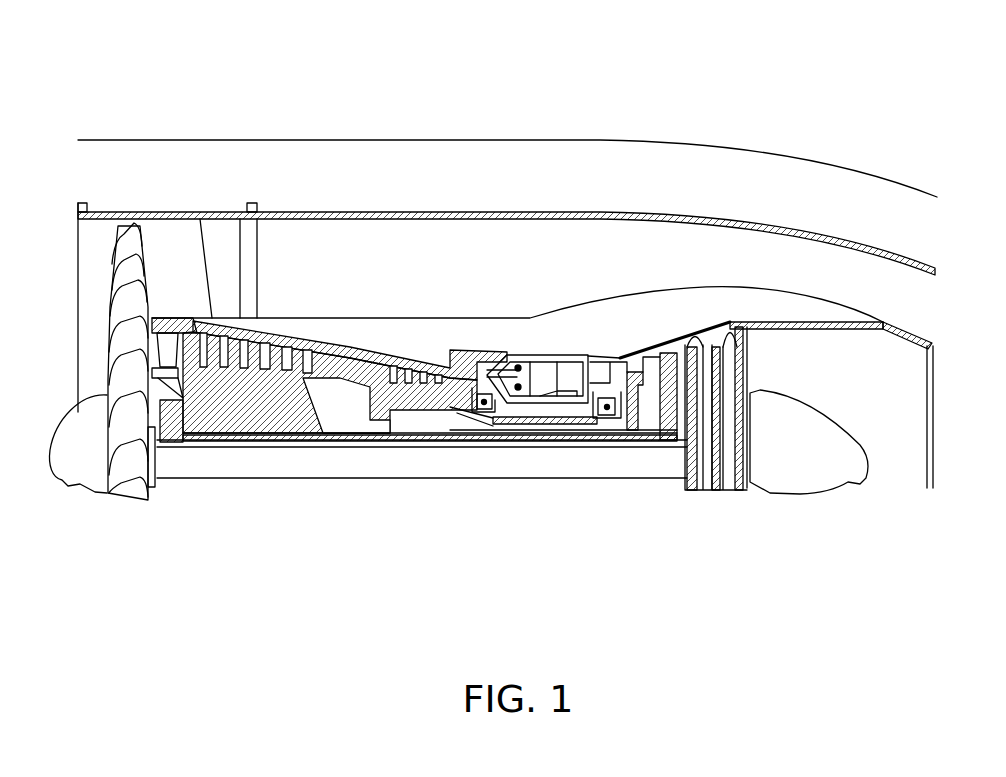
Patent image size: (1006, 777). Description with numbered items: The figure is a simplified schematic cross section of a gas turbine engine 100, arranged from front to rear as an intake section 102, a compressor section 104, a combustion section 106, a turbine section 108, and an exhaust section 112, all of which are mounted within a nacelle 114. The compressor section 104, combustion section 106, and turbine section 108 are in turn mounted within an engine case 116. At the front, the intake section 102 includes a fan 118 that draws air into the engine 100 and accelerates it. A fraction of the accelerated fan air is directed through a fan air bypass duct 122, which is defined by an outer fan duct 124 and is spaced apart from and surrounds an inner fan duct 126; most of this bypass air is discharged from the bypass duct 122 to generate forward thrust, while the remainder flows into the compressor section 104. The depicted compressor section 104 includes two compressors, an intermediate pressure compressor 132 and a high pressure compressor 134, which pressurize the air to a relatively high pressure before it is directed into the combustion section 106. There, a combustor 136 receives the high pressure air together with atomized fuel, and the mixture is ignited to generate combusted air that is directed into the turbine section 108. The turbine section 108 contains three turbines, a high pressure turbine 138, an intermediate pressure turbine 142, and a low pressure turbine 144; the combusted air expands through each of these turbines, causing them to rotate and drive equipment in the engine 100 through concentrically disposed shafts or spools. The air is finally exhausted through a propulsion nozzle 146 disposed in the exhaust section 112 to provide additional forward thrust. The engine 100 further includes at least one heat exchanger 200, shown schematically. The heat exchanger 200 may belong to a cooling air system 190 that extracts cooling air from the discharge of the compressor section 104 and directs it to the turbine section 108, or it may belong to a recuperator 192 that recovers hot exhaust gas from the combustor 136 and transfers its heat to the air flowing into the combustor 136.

The gas turbine engine 100 is at (293, 123).
The intake section 102 is at (160, 563).
The compressor section 104 is at (483, 563).
The combustion section 106 is at (612, 563).
The turbine section 108 is at (612, 563).
The exhaust section 112 is at (745, 563).
The nacelle 114 is at (795, 158).
The engine case 116 is at (173, 324).
The fan 118 is at (120, 316).
The fan air bypass duct 122 is at (300, 284).
The outer fan duct 124 is at (176, 212).
The inner fan duct 126 is at (500, 318).
The intermediate pressure compressor 132 is at (263, 430).
The high pressure compressor 134 is at (430, 400).
The combustor 136 is at (597, 350).
The high pressure turbine 138 is at (631, 367).
The intermediate pressure turbine 142 is at (686, 365).
The low pressure turbine 144 is at (724, 346).
The propulsion nozzle 146 is at (910, 411).
The cooling air system 190 is at (597, 417).
The recuperator 192 is at (490, 415).
The heat exchanger 200 is at (483, 396).